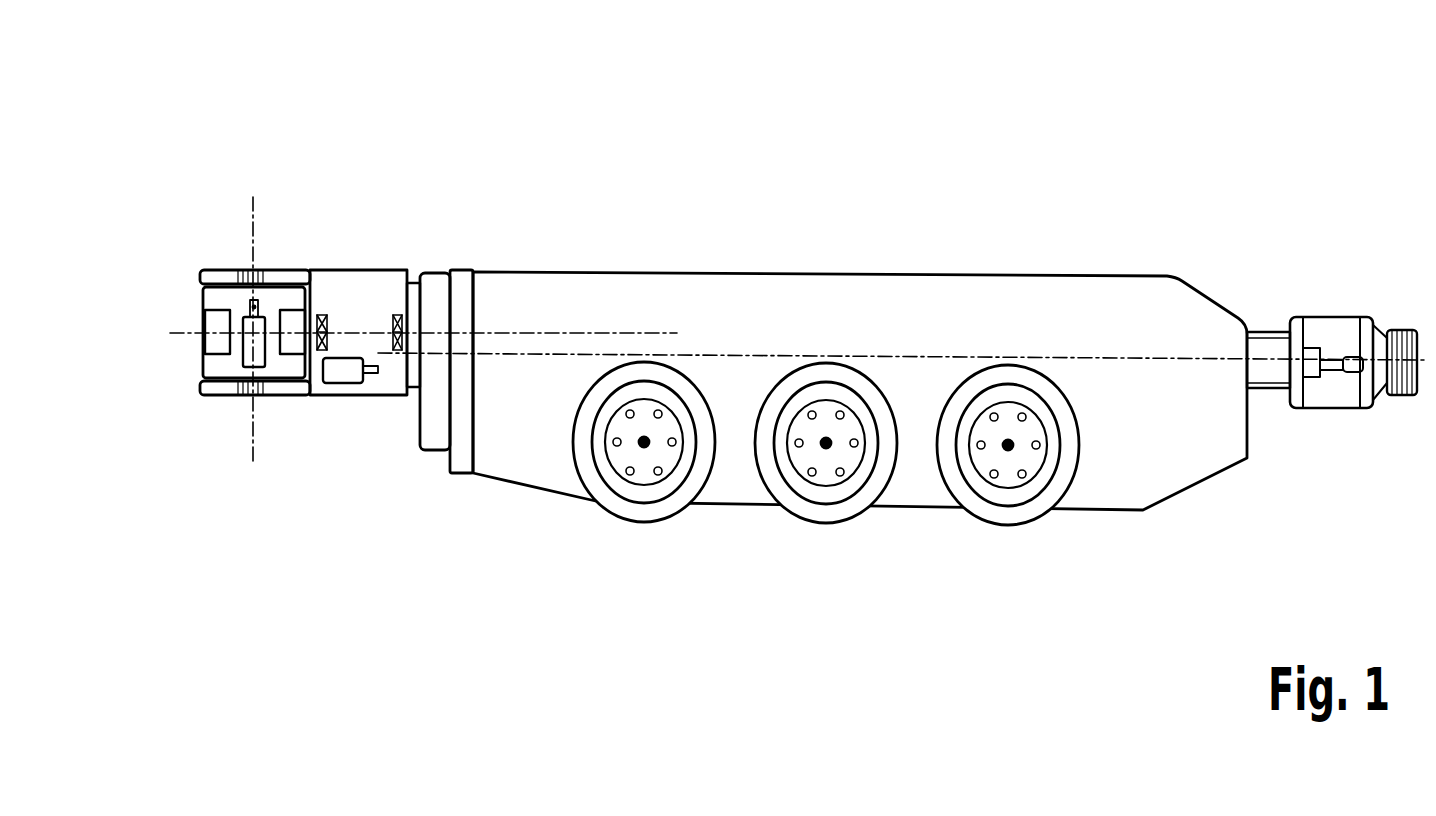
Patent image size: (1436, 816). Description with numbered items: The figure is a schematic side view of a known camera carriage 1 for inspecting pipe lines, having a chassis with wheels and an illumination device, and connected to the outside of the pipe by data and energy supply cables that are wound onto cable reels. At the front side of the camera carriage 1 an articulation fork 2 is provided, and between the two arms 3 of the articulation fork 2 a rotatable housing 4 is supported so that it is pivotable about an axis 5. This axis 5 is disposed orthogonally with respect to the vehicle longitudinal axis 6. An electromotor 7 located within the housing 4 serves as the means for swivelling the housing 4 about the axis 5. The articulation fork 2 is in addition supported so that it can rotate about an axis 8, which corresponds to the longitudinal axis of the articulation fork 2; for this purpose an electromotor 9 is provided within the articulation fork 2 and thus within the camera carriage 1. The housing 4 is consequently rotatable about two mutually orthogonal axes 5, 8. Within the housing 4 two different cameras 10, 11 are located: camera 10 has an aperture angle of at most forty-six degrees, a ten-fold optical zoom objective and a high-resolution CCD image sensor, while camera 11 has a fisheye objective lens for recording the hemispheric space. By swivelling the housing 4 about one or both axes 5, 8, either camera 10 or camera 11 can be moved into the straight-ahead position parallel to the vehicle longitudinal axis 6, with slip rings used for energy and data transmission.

The camera carriage 1 is at (1128, 428).
The articulation fork 2 is at (405, 270).
The arms 3 is at (283, 270).
The housing 4 is at (237, 299).
The axis 5 is at (258, 222).
The vehicle longitudinal axis 6 is at (903, 352).
The electromotor 7 is at (264, 327).
The axis 8 is at (583, 331).
The electromotor 9 is at (366, 386).
The camera 10 is at (211, 356).
The camera 11 is at (294, 360).